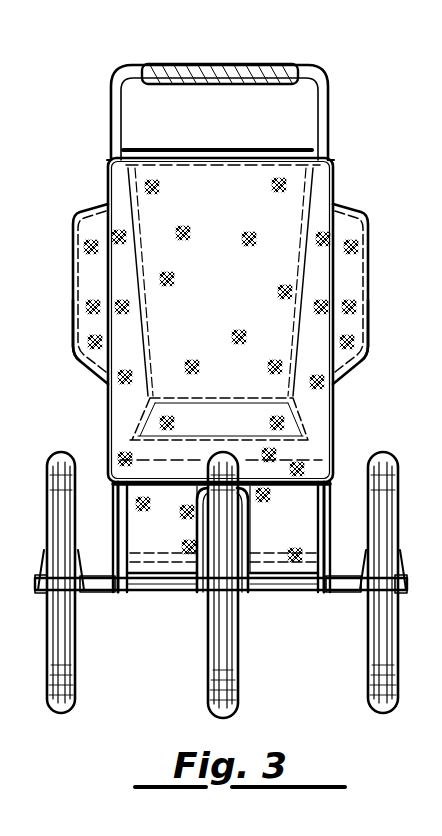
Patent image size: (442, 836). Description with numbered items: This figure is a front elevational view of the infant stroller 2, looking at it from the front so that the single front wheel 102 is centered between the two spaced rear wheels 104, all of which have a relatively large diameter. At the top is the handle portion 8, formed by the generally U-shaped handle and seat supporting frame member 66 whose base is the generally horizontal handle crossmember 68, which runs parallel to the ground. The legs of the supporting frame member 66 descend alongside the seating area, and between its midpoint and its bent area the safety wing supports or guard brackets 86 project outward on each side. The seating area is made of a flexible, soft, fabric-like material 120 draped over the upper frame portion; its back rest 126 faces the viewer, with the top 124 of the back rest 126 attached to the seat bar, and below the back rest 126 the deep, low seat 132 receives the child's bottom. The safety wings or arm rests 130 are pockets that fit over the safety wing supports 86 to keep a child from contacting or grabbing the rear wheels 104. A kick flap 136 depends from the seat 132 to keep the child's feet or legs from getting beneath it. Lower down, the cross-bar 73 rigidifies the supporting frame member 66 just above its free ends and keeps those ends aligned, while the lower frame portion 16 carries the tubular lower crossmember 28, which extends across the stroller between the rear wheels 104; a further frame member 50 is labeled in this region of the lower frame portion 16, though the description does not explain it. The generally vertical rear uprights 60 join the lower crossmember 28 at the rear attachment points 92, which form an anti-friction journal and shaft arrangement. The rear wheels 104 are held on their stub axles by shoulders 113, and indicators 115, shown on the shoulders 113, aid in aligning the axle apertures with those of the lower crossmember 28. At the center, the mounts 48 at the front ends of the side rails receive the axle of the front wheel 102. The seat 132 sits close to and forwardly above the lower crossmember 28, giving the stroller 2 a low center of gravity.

The infant stroller 2 is at (284, 676).
The handle portion 8 is at (114, 72).
The lower frame portion 16 is at (322, 597).
The lower crossmember 28 is at (270, 591).
The mounts 48 is at (197, 598).
The cross member 50 is at (250, 537).
The rear uprights 60 is at (110, 492).
The handle and seat supporting frame member 66 is at (322, 135).
The handle crossmember 68 is at (305, 67).
The cross-bar 73 is at (141, 552).
The safety wing supports 86 is at (76, 214).
The rear attachment points 92 is at (130, 603).
The front wheel 102 is at (210, 711).
The rear wheels 104 is at (60, 716).
The shoulder 113 is at (92, 590).
The indicators 115 is at (85, 572).
The fabric-like material 120 is at (323, 440).
The top of the back rest 124 is at (234, 201).
The back rest 126 is at (234, 286).
The safety wings 130 is at (78, 356).
The seat 132 is at (237, 432).
The kick flap 136 is at (302, 515).